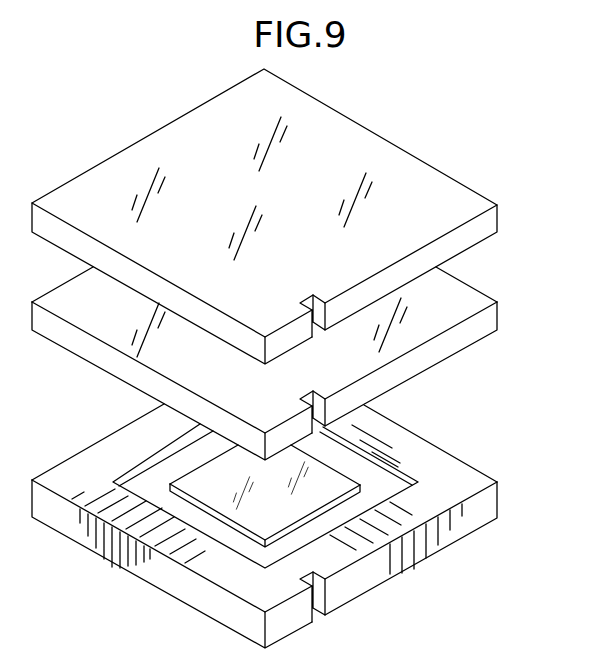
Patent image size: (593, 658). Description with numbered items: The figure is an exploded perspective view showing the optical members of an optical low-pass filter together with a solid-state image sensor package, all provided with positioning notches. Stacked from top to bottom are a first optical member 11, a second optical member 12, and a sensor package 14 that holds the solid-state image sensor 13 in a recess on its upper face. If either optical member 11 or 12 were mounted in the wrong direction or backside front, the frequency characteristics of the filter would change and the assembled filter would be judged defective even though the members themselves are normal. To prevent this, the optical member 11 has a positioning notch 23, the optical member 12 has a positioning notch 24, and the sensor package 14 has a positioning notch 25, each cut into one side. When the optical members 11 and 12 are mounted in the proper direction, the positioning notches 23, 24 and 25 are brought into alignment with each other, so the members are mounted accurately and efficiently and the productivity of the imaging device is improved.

The optical member 11 is at (442, 197).
The optical member 12 is at (442, 295).
The solid-state image sensor 13 is at (258, 515).
The sensor package 14 is at (457, 470).
The positioning notch 23 is at (302, 305).
The positioning notch 24 is at (302, 400).
The positioning notch 25 is at (328, 598).